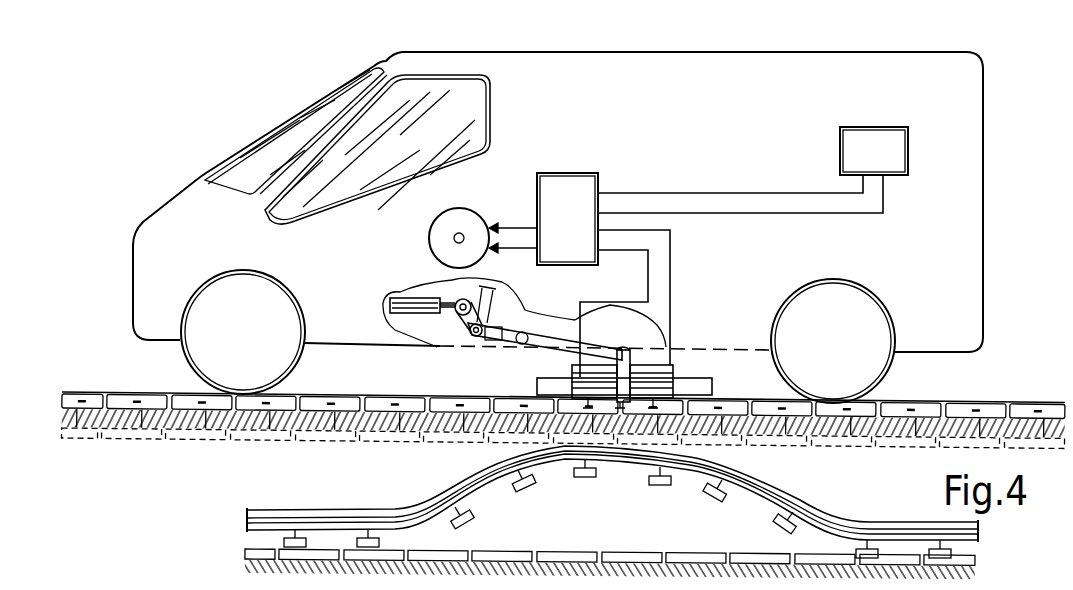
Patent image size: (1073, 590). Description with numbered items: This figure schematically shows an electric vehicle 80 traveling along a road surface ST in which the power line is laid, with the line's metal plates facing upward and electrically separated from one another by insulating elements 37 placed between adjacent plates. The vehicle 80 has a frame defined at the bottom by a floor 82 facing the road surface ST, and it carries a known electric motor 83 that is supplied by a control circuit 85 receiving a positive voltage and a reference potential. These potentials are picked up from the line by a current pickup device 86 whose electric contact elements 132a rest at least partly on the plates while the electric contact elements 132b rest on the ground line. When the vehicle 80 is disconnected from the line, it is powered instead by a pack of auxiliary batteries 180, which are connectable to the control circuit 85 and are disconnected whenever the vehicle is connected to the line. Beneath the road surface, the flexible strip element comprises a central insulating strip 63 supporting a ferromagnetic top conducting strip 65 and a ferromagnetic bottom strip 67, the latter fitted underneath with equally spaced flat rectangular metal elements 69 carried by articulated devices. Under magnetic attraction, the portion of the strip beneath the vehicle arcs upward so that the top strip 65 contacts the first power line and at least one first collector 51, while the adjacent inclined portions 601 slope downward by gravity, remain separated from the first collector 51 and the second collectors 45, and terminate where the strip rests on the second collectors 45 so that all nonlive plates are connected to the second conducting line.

The electric vehicle 80 is at (558, 227).
The road surface ST is at (108, 392).
The insulating element 37 is at (175, 392).
The first collector 51 is at (437, 448).
The control circuit 85 is at (557, 199).
The electric motor 83 is at (447, 250).
The pack of auxiliary batteries 180 is at (872, 158).
The floor 82 is at (420, 348).
The current pickup device 86 is at (520, 358).
The electric contact elements 132a is at (677, 398).
The electric contact elements 132b is at (612, 398).
The inclined portions 601 is at (420, 494).
The top conducting strip 65 is at (472, 483).
The insulating strip 63 is at (497, 480).
The bottom strip 67 is at (542, 466).
The flat rectangular metal element 69 is at (462, 523).
The second collector 45 is at (562, 546).